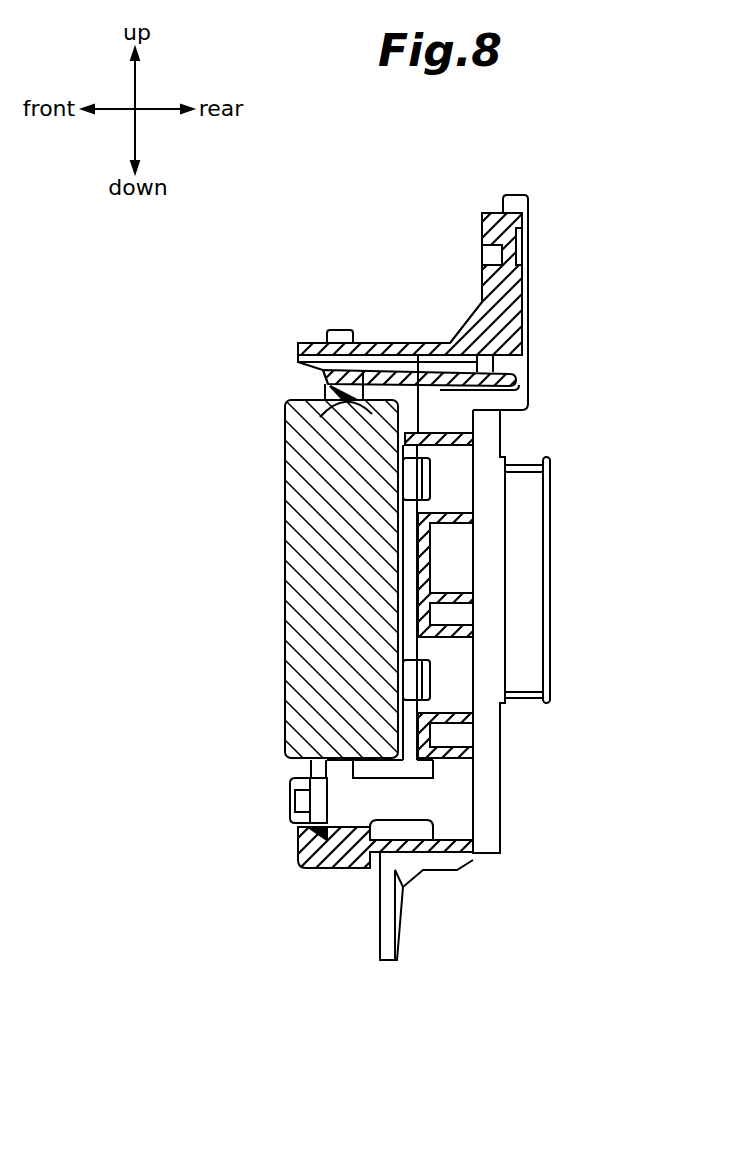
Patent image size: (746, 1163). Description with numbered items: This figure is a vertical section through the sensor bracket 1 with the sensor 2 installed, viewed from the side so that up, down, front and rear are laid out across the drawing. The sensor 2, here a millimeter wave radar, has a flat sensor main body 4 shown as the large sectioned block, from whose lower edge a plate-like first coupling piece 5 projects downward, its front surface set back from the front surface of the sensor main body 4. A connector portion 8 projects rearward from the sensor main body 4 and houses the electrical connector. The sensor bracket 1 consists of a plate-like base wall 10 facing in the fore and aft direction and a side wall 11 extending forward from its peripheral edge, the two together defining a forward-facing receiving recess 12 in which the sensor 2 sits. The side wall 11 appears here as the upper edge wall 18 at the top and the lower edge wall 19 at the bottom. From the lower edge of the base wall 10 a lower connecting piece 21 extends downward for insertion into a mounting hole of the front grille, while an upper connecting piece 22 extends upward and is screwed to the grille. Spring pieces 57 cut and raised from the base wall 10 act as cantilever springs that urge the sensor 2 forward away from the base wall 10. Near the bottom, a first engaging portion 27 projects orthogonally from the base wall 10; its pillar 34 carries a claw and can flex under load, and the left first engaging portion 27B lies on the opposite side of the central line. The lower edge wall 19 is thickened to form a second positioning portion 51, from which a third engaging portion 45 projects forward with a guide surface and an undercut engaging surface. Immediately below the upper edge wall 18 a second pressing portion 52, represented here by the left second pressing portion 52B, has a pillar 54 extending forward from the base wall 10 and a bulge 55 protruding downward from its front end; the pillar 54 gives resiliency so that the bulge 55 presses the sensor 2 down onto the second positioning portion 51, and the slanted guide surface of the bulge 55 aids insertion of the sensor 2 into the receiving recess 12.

The sensor bracket 1 is at (541, 212).
The sensor 2 is at (272, 615).
The sensor main body 4 is at (292, 537).
The first coupling piece 5 is at (327, 768).
The connector portion 8 is at (530, 580).
The base wall 10 is at (432, 552).
The side wall 11 is at (417, 330).
The receiving recess 12 is at (370, 357).
The upper edge wall 18 is at (452, 347).
The lower edge wall 19 is at (370, 862).
The lower connecting piece 21 is at (390, 937).
The upper connecting piece 22 is at (486, 213).
The first engaging portion 27 is at (278, 800).
The bolt head flange 27B is at (300, 817).
The pillar 34 is at (410, 797).
The third engaging portion 45 is at (300, 834).
The second positioning portion 51 is at (410, 823).
The second pressing portion 52 is at (298, 374).
The left second pressing portion 52B is at (302, 345).
The pillar 54 is at (440, 397).
The bulge 55 is at (296, 415).
The spring piece 57 is at (410, 485).